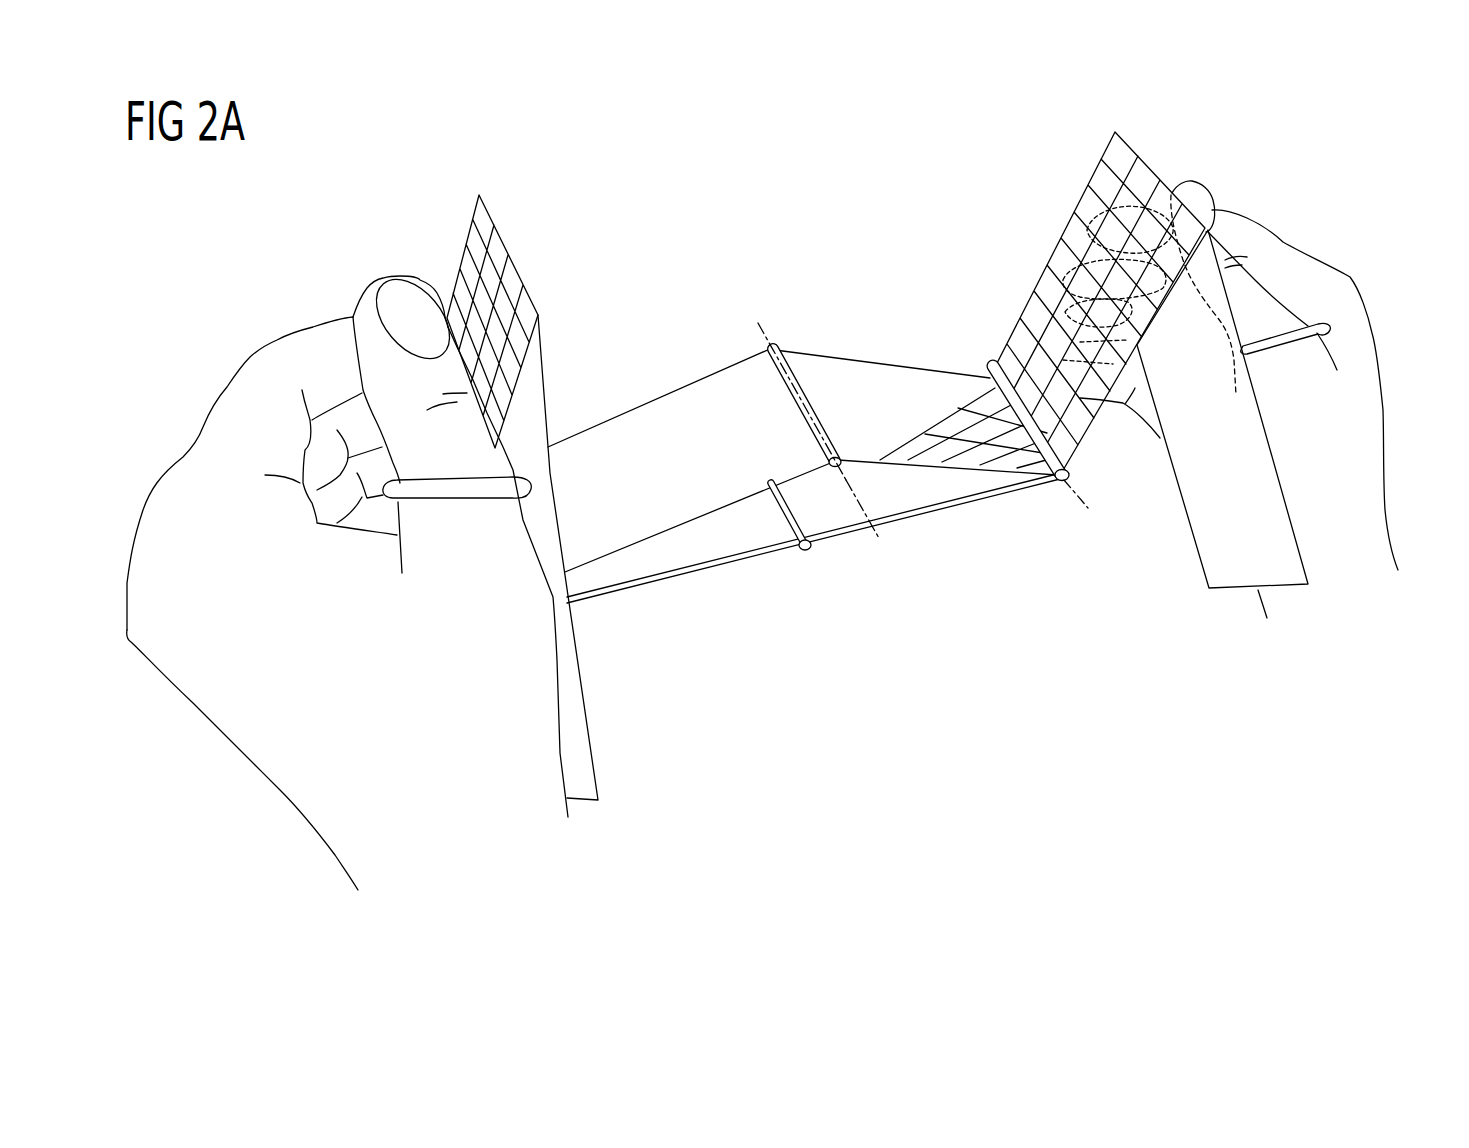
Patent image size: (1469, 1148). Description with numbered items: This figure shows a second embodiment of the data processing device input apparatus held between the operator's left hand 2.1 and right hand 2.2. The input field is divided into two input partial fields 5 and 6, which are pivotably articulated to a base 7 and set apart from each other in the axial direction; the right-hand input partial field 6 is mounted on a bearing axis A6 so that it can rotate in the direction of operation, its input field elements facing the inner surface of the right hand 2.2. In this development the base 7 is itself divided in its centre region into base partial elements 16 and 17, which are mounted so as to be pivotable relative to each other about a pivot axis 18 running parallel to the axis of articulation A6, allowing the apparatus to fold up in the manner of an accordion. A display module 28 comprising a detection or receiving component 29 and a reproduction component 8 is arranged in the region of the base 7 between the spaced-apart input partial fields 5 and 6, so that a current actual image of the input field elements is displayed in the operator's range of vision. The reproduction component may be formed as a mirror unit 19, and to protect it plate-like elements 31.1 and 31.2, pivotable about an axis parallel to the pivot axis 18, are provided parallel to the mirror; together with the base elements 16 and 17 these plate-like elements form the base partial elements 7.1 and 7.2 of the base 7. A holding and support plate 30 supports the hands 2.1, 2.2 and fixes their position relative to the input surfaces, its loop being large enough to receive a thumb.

The left hand 2.1 is at (273, 745).
The right hand 2.2 is at (1366, 493).
The input partial field 5 is at (508, 272).
The input partial field 6 is at (1116, 146).
The base 7 is at (876, 381).
The base partial element 7.1 is at (804, 517).
The base partial element 7.2 is at (990, 339).
The reproduction component 8 is at (916, 371).
The detection or receiving component 29 is at (916, 412).
The display module 28 is at (916, 412).
The mirror unit 19 is at (840, 378).
The base partial element 16 is at (657, 428).
The base partial element 17 is at (935, 394).
The pivot axis 18 is at (760, 338).
The holding and support plate 30 is at (577, 733).
The plate-like element 31.1 is at (727, 537).
The plate-like element 31.2 is at (878, 500).
The bearing axis A6 is at (1089, 522).